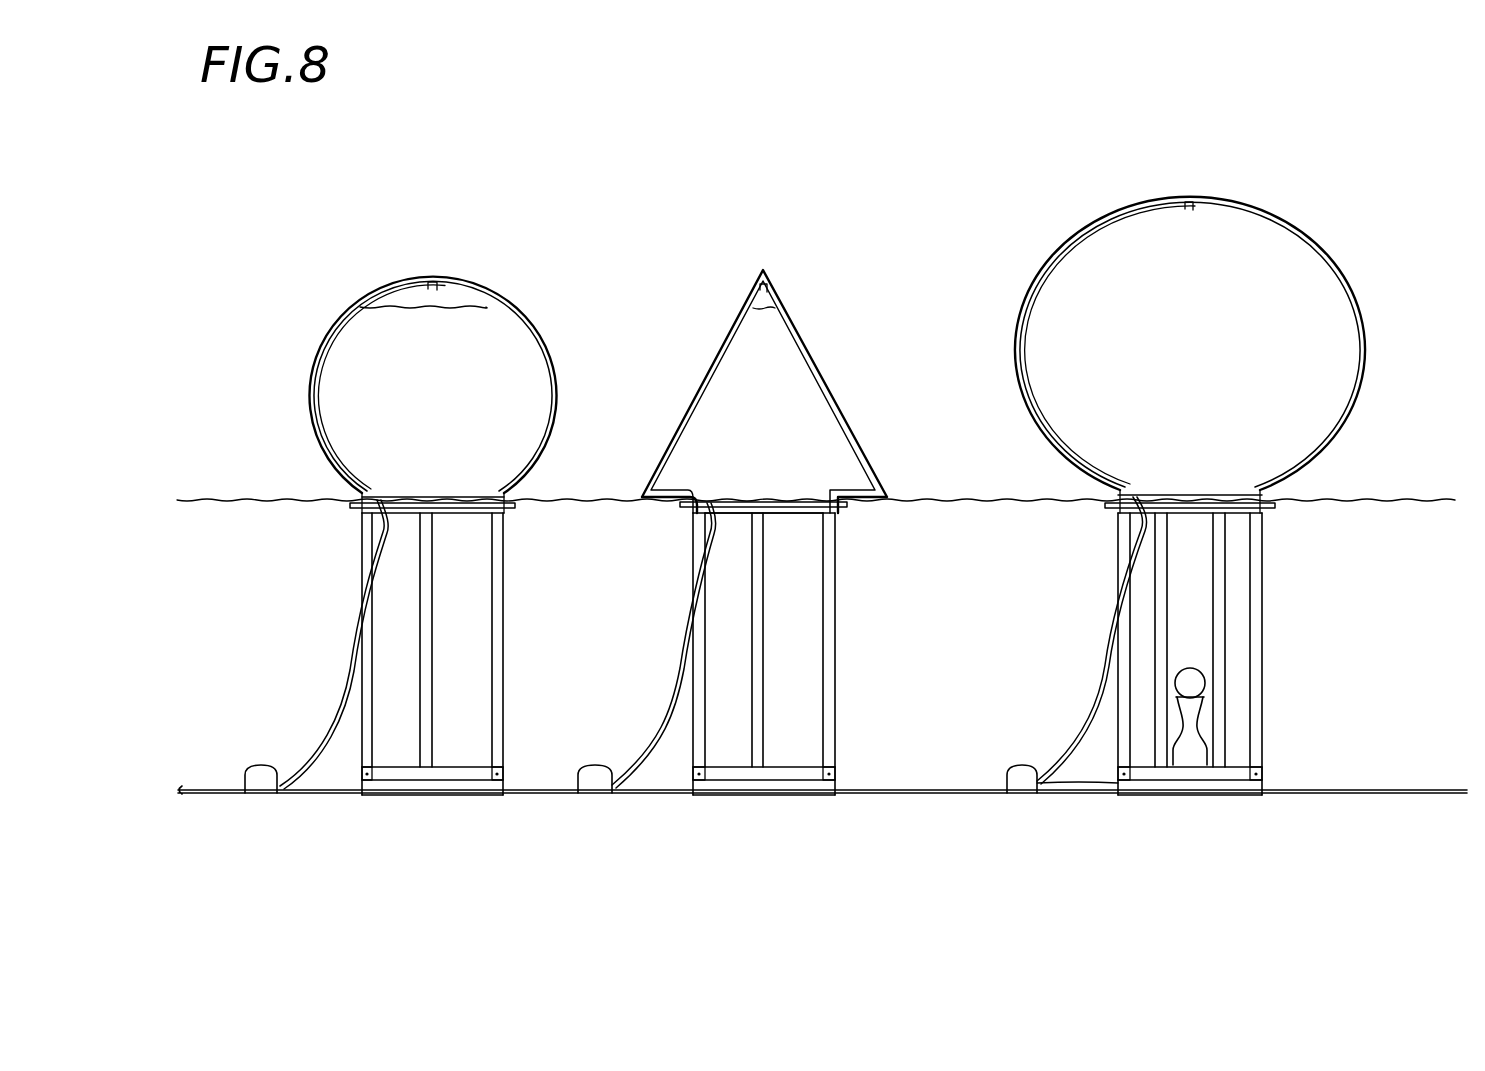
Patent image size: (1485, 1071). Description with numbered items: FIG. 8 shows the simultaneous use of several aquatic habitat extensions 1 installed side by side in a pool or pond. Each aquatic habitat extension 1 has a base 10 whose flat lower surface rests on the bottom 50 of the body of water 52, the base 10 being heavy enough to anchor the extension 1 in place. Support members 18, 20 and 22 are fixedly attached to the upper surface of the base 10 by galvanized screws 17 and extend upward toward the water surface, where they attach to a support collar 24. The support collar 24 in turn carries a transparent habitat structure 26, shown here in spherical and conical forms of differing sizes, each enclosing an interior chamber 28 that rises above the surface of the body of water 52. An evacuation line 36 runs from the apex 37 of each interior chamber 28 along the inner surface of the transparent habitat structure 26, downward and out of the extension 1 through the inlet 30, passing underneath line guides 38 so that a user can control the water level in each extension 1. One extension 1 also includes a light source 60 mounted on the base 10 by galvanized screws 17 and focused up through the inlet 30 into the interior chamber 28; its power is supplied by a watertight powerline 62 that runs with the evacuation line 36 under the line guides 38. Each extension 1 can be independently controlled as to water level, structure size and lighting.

The aquatic habitat extension 1 is at (525, 270).
The base 10 is at (1263, 785).
The galvanized screws 17 is at (365, 755).
The support member 18 is at (838, 699).
The support member 20 is at (765, 655).
The support member 22 is at (707, 675).
The support collar 24 is at (683, 513).
The transparent habitat structure 26 is at (552, 435).
The interior chamber 28 is at (333, 393).
The inlet 30 is at (800, 528).
The evacuation line 36 is at (347, 668).
The apex 37 is at (440, 280).
The line guides 38 is at (262, 762).
The bottom 50 is at (1428, 790).
The body of water 52 is at (250, 510).
The light source 60 is at (1200, 702).
The watertight powerline 62 is at (1097, 793).